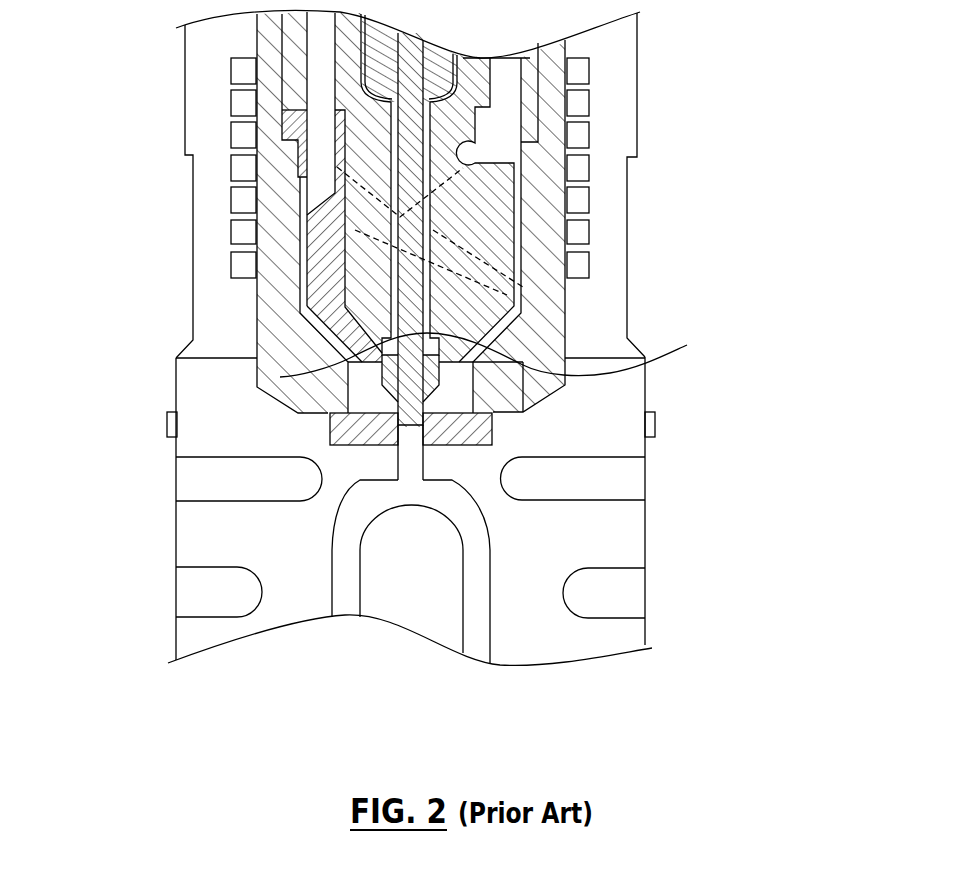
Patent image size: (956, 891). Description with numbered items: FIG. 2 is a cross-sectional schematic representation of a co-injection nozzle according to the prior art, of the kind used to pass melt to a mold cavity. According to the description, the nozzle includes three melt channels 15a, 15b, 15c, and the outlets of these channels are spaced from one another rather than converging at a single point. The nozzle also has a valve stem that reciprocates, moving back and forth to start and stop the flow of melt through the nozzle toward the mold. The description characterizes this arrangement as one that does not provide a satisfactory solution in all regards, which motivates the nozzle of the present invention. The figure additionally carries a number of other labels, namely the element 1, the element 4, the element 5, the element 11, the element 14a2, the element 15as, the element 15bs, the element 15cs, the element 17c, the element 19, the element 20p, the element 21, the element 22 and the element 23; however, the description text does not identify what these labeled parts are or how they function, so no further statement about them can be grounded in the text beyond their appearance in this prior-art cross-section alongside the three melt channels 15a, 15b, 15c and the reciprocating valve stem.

The mold plate 1 is at (650, 512).
The runner channel 4 is at (480, 613).
The gate 5 is at (405, 467).
The hot runner nozzle 11 is at (497, 249).
The nozzle body 14a2 is at (370, 208).
The melt channel 15a is at (300, 245).
The melt channel 15b is at (343, 280).
The melt channel 15c is at (350, 296).
The first sealing surface 15as is at (393, 331).
The second sealing surface 15bs is at (350, 355).
The third sealing surface 15cs is at (280, 377).
The nozzle tip 17c is at (630, 364).
The melt channel 19 is at (408, 372).
The tip insert 20p is at (430, 463).
The valve pin 21 is at (427, 216).
The valve pin bushing 22 is at (450, 238).
The nozzle housing 23 is at (543, 310).